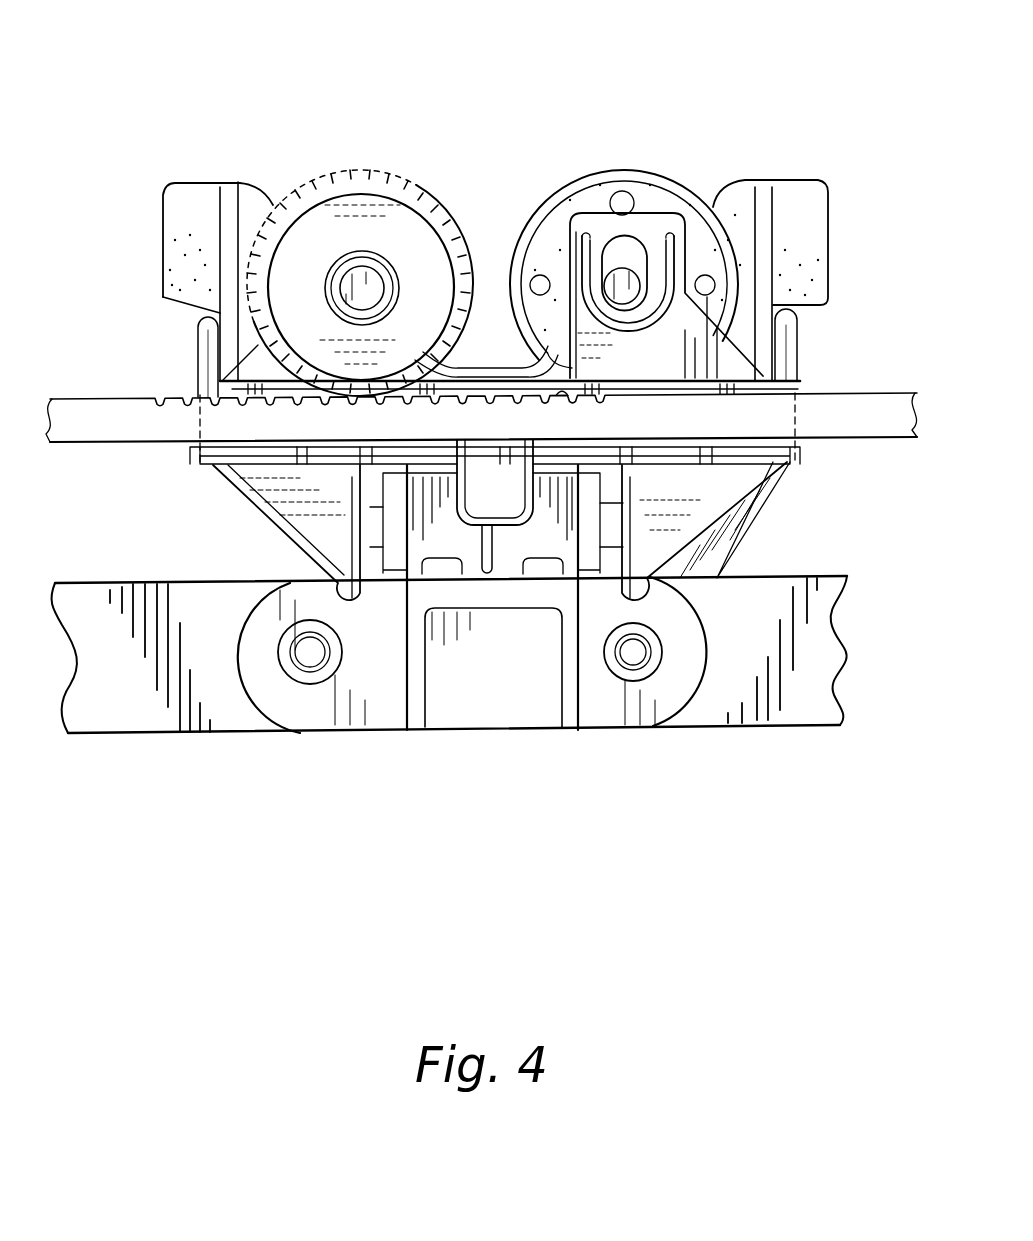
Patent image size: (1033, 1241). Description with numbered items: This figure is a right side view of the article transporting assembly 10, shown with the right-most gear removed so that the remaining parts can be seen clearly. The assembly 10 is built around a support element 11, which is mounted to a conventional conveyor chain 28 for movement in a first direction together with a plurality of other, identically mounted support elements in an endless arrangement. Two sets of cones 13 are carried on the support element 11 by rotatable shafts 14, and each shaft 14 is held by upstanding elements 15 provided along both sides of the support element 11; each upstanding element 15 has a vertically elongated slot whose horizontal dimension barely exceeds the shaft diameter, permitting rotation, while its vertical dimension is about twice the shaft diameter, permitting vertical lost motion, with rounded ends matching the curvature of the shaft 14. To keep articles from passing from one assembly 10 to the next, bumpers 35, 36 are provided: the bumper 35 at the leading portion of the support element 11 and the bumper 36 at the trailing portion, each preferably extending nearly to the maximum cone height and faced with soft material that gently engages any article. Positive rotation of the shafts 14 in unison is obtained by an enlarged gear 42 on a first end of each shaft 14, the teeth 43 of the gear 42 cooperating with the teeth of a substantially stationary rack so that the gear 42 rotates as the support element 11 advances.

The article transporting assembly 10 is at (837, 114).
The support element 11 is at (777, 378).
The set of cones 13 is at (602, 138).
The rotatable shaft 14 is at (622, 286).
The upstanding element 15 is at (655, 232).
The conveyor chain 28 is at (768, 705).
The bumper 35 is at (193, 222).
The bumper 36 is at (791, 217).
The gear 42 is at (373, 140).
The teeth 43 is at (413, 192).